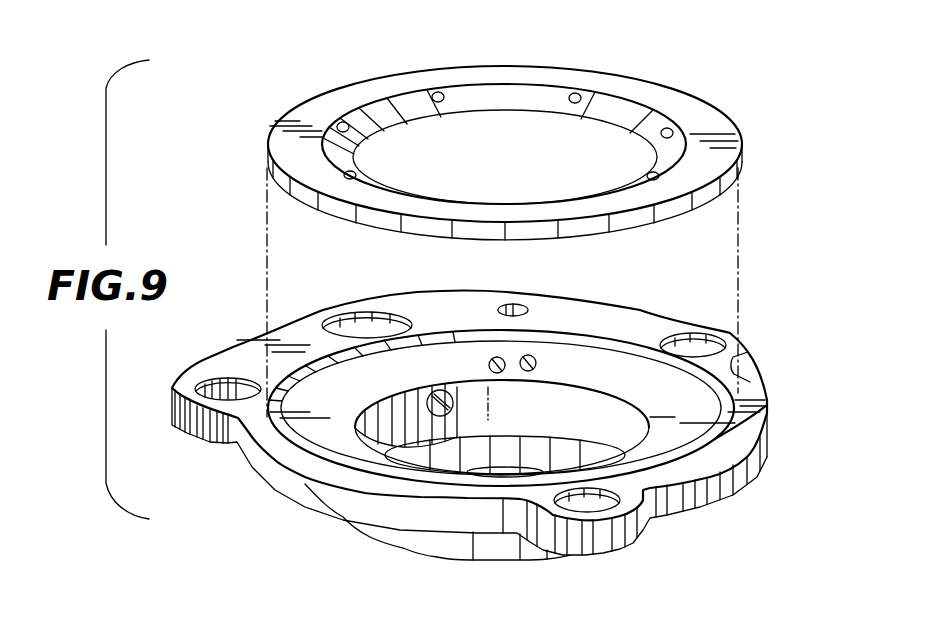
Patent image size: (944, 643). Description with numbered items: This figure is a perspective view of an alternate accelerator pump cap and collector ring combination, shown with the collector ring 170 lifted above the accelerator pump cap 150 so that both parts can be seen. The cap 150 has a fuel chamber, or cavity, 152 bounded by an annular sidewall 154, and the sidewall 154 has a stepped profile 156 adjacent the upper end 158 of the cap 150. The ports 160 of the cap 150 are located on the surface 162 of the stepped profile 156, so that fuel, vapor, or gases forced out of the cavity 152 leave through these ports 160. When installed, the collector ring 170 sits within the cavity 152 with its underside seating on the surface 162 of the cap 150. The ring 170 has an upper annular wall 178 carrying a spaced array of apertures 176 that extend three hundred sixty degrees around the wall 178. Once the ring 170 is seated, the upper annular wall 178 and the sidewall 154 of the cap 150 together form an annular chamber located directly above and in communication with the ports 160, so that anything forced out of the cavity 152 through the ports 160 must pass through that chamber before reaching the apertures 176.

The accelerator pump cap 150 is at (326, 487).
The fuel cavity 152 is at (557, 414).
The annular sidewall 154 is at (553, 428).
The stepped profile 156 is at (417, 392).
The upper end 158 is at (743, 392).
The ports 160 is at (518, 355).
The surface 162 is at (468, 362).
The collector ring 170 is at (668, 89).
The apertures 176 is at (572, 97).
The upper annular wall 178 is at (458, 113).